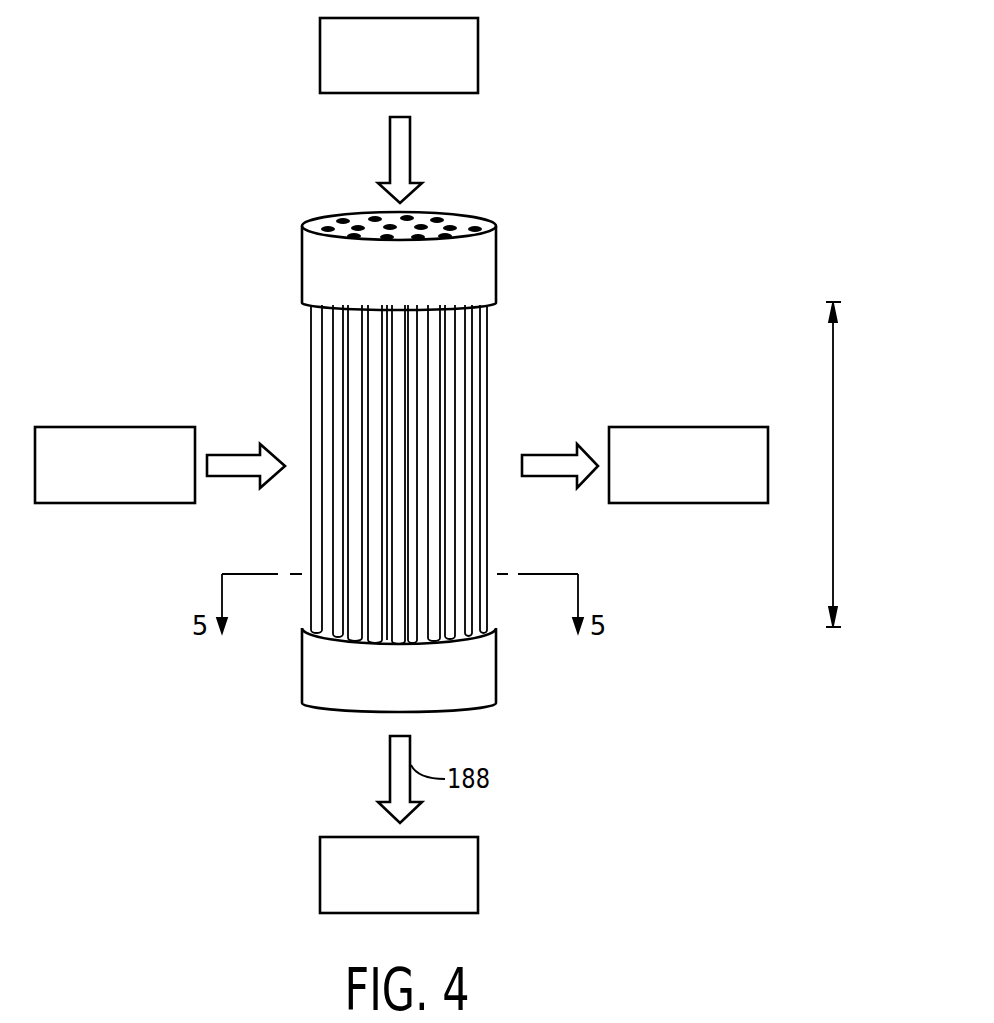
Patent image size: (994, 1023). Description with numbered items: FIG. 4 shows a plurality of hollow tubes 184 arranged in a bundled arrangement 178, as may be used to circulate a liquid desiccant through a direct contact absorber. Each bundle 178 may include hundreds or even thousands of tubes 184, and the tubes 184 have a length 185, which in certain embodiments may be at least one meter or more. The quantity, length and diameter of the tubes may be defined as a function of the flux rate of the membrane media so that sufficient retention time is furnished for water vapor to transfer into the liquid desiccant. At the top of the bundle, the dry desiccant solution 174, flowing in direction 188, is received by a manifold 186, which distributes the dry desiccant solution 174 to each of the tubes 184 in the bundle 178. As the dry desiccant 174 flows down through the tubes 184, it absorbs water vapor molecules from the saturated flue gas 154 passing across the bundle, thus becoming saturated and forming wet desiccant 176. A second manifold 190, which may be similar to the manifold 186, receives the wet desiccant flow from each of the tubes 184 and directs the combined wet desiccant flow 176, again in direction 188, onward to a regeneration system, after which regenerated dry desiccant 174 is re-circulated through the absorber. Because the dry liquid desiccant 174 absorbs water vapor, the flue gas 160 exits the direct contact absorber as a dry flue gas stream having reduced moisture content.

The bundled arrangement 178 is at (239, 173).
The dry desiccant solution 174 is at (479, 57).
The flow direction 188 is at (411, 145).
The manifold 186 is at (497, 262).
The tubes 184 is at (453, 348).
The second manifold 190 is at (497, 662).
The saturated flue gas 154 is at (117, 426).
The flue gas 160 is at (694, 426).
The length 185 is at (834, 467).
The wet desiccant 176 is at (479, 875).